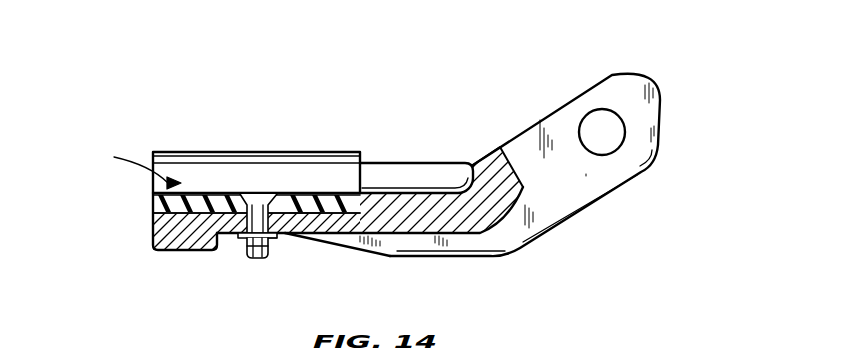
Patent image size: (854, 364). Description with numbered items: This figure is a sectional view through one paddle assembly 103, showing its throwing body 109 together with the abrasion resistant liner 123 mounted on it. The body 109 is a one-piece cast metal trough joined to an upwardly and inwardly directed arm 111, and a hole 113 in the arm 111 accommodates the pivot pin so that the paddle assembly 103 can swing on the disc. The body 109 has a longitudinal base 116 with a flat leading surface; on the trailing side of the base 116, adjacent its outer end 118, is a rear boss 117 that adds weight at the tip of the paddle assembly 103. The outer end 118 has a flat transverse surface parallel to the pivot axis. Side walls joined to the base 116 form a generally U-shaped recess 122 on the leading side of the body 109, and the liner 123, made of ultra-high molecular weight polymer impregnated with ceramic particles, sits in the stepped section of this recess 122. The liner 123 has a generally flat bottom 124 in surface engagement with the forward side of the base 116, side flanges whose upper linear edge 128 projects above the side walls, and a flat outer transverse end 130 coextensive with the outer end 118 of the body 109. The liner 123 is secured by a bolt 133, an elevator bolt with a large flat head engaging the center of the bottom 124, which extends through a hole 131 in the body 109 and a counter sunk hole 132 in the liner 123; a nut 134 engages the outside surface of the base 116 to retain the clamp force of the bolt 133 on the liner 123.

The paddle assembly 103 is at (402, 141).
The throwing body 109 is at (447, 235).
The arm 111 is at (581, 187).
The hole 113 is at (617, 132).
The base 116 is at (300, 215).
The boss 117 is at (186, 252).
The outer end 118 is at (152, 220).
The recess 122 is at (433, 173).
The liner 123 is at (130, 169).
The bottom 124 is at (330, 235).
The upper linear edge 128 is at (315, 160).
The outer transverse end 130 is at (153, 207).
The hole 131 is at (236, 236).
The counter sunk hole 132 is at (287, 240).
The bolt 133 is at (258, 195).
The nut 134 is at (252, 258).